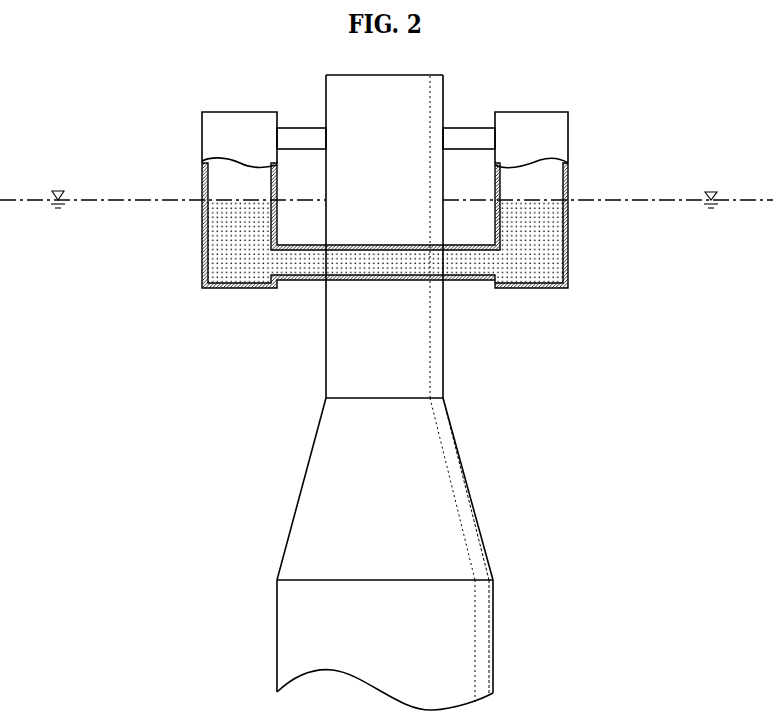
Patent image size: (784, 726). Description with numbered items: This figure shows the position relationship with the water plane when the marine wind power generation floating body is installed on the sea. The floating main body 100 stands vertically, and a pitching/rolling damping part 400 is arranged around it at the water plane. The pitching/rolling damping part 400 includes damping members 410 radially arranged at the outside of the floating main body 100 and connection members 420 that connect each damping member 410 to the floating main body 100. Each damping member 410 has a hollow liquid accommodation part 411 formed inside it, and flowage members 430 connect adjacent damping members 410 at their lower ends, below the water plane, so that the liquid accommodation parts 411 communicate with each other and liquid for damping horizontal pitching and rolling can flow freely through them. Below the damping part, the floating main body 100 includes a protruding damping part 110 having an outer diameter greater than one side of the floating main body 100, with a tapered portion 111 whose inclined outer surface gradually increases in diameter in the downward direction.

The floating main body 100 is at (447, 373).
The protruding damping part 110 is at (487, 627).
The tapered portion 111 is at (468, 508).
The pitching/rolling damping part 400 is at (457, 179).
The damping member 410 is at (557, 134).
The liquid accommodation part 411 is at (545, 190).
The connection member 420 is at (463, 133).
The flowage member 430 is at (427, 241).